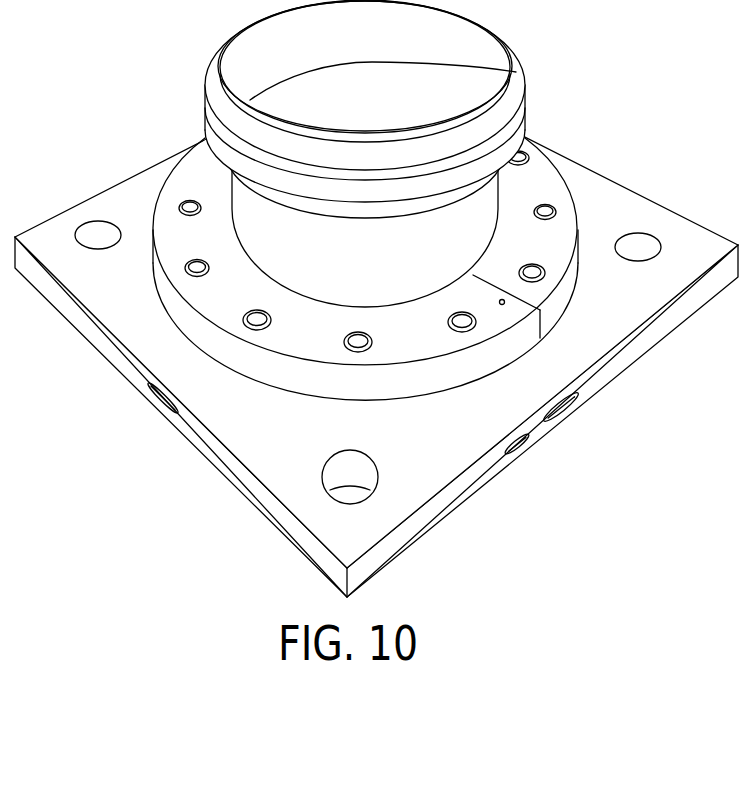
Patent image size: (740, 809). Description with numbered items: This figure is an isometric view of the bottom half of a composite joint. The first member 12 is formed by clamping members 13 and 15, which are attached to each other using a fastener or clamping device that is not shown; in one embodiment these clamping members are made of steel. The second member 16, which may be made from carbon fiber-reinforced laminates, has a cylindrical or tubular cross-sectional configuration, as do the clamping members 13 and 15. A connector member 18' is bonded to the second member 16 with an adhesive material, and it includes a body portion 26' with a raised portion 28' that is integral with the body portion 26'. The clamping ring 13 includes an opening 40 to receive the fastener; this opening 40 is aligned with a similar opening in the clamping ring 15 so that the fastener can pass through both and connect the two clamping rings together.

The first member 12 is at (573, 358).
The clamping member 13 is at (566, 236).
The clamping member 15 is at (605, 318).
The second member 16 is at (493, 196).
The connector member 18' is at (396, 172).
The body portion 26' is at (391, 85).
The raised portion 28' is at (396, 132).
The opening 40 is at (360, 344).